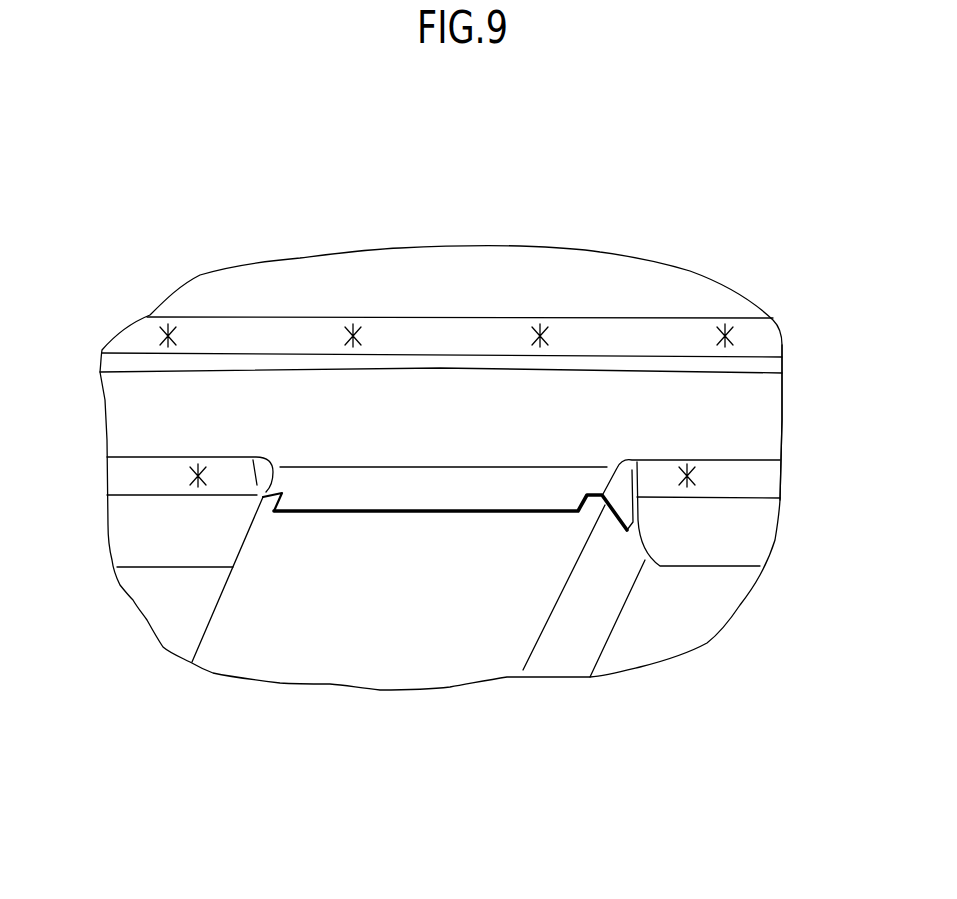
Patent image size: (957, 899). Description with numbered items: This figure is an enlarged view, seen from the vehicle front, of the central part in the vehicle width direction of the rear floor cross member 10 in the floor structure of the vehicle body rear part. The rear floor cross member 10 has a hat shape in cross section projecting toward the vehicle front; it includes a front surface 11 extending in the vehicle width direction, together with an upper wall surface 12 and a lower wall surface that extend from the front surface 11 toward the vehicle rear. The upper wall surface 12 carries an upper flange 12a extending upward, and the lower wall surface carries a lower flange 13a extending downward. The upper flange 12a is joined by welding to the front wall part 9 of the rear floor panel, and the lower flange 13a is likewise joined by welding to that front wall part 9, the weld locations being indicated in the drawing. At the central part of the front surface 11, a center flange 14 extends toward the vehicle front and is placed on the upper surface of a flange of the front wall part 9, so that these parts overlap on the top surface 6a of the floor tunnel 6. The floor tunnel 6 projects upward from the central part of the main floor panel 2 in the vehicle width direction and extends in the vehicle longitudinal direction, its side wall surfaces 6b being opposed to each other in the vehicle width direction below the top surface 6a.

The main floor panel 2 is at (693, 598).
The floor tunnel 6 is at (487, 646).
The top surface 6a is at (403, 633).
The side wall surfaces 6b is at (587, 632).
The front wall part 9 is at (512, 282).
The rear floor cross member 10 is at (580, 397).
The front surface 11 is at (748, 422).
The upper wall surface 12 is at (303, 355).
The upper flange 12a is at (422, 333).
The lower flange 13a is at (152, 478).
The center flange 14 is at (372, 492).